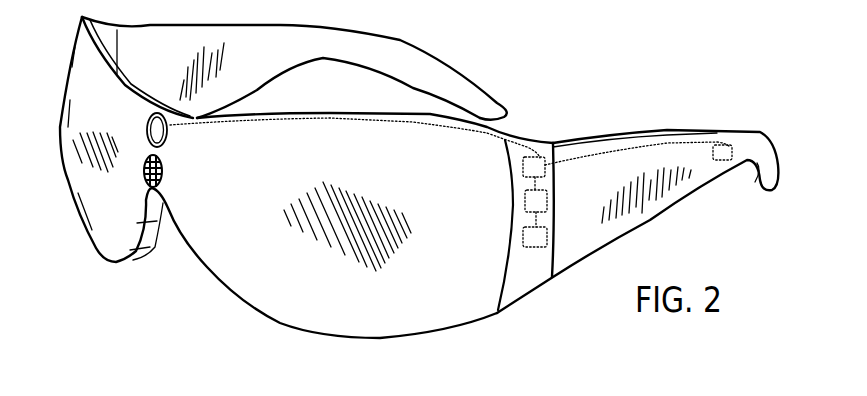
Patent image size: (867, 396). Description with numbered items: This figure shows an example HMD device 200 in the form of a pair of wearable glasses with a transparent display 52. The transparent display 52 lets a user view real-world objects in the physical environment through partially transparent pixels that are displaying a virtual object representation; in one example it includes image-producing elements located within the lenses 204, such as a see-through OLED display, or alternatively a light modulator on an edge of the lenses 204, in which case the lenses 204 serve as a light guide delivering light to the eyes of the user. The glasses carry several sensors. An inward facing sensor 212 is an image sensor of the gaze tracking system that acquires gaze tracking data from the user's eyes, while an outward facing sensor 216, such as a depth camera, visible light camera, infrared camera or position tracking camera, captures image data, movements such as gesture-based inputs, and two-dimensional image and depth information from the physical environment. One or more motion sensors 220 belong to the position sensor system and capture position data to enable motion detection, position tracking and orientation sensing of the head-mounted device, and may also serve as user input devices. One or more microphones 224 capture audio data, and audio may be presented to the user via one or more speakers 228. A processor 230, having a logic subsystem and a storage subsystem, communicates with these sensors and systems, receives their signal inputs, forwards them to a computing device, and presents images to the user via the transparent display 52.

The HMD device 200 is at (88, 297).
The lenses 204 is at (102, 238).
The transparent display 52 is at (238, 277).
The inward facing sensor 212 is at (175, 128).
The outward facing sensor 216 is at (171, 168).
The motion sensors 220 is at (541, 157).
The microphones 224 is at (548, 193).
The processor 230 is at (548, 229).
The speakers 228 is at (729, 145).